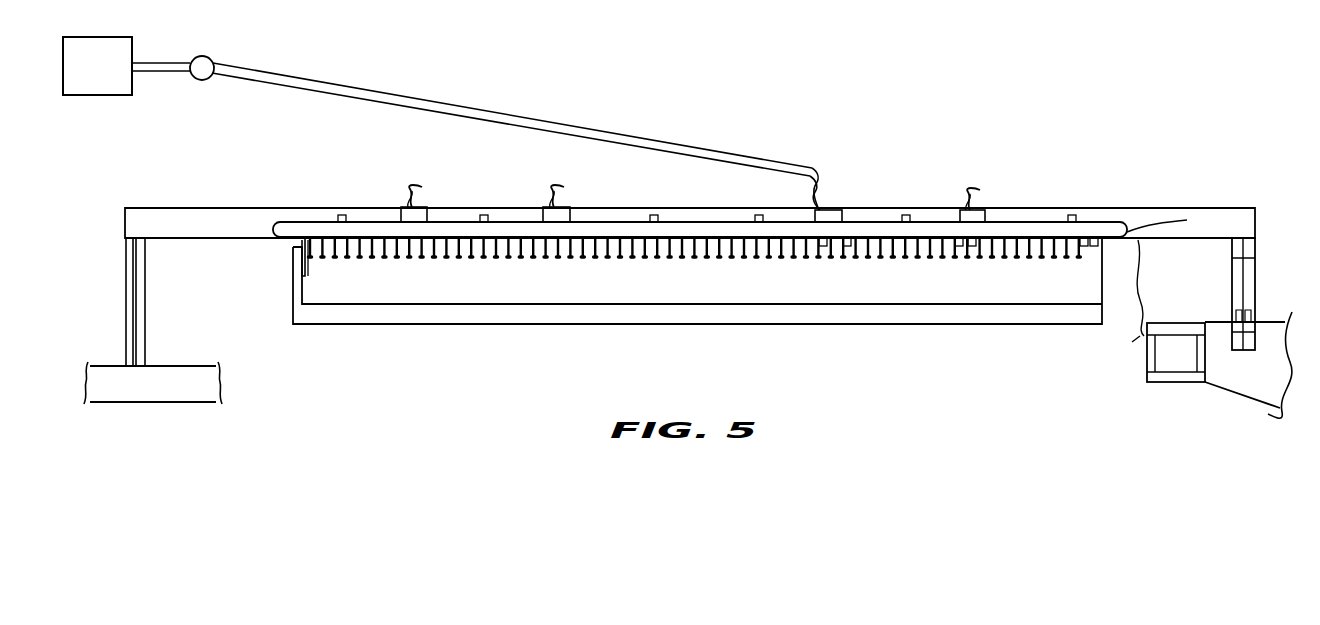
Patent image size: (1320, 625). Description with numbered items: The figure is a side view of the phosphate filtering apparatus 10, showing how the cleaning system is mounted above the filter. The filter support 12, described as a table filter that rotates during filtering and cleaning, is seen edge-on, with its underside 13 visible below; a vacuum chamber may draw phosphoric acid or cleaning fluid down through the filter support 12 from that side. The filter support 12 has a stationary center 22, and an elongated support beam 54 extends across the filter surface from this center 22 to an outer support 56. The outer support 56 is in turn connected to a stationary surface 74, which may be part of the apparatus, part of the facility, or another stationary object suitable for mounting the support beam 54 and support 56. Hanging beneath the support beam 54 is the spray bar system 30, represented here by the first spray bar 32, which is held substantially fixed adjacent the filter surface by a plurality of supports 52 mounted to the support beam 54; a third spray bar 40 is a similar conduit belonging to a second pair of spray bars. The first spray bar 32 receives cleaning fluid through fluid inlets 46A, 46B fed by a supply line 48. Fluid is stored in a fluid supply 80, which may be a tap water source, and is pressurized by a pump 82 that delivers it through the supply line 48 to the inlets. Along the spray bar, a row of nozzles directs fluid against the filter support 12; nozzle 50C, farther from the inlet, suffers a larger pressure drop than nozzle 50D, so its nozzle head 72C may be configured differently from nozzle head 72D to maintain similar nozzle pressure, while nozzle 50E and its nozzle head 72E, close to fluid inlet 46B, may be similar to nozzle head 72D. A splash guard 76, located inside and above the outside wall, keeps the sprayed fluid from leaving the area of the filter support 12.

The phosphate filtering apparatus 10 is at (941, 118).
The filter support 12 is at (458, 358).
The underside 13 is at (340, 326).
The center 22 is at (1288, 412).
The spray bar system 30 is at (1148, 226).
The first spray bar 32 is at (926, 232).
The third spray bar 40 is at (502, 232).
The fluid inlet 46A is at (983, 210).
The fluid inlet 46B is at (840, 210).
The supply line 48 is at (426, 205).
The nozzle 50C is at (1094, 246).
The nozzle 50D is at (970, 248).
The nozzle 50E is at (847, 252).
The supports 52 is at (348, 214).
The support beam 54 is at (202, 218).
The outer support 56 is at (127, 288).
The nozzle head 72C is at (1086, 246).
The nozzle head 72D is at (962, 247).
The nozzle head 72E is at (830, 250).
The stationary surface 74 is at (164, 390).
The splash guard 76 is at (294, 246).
The fluid supply 80 is at (126, 66).
The pump 82 is at (201, 56).